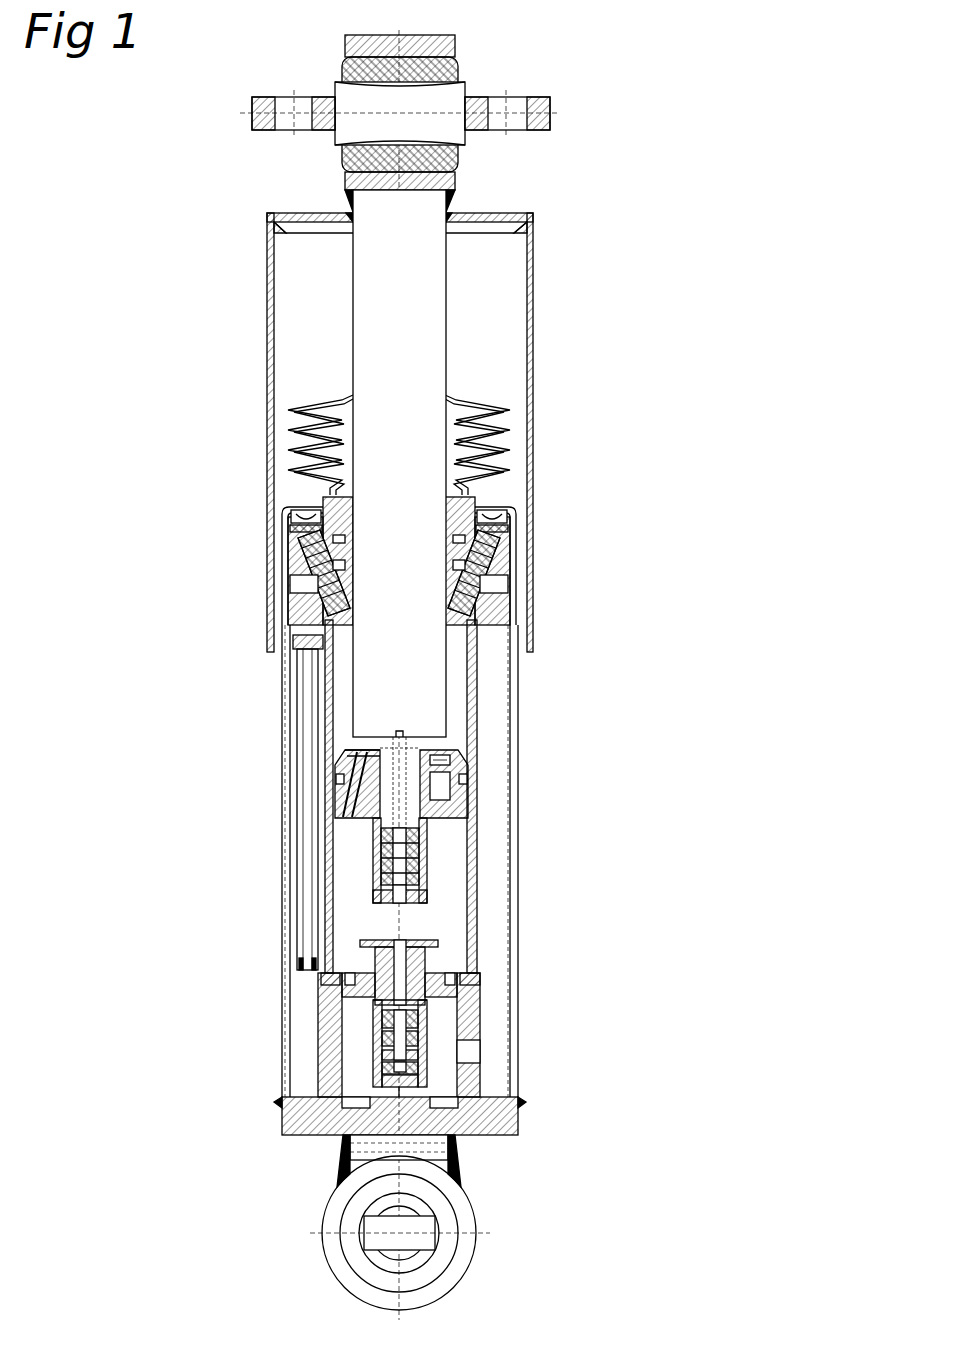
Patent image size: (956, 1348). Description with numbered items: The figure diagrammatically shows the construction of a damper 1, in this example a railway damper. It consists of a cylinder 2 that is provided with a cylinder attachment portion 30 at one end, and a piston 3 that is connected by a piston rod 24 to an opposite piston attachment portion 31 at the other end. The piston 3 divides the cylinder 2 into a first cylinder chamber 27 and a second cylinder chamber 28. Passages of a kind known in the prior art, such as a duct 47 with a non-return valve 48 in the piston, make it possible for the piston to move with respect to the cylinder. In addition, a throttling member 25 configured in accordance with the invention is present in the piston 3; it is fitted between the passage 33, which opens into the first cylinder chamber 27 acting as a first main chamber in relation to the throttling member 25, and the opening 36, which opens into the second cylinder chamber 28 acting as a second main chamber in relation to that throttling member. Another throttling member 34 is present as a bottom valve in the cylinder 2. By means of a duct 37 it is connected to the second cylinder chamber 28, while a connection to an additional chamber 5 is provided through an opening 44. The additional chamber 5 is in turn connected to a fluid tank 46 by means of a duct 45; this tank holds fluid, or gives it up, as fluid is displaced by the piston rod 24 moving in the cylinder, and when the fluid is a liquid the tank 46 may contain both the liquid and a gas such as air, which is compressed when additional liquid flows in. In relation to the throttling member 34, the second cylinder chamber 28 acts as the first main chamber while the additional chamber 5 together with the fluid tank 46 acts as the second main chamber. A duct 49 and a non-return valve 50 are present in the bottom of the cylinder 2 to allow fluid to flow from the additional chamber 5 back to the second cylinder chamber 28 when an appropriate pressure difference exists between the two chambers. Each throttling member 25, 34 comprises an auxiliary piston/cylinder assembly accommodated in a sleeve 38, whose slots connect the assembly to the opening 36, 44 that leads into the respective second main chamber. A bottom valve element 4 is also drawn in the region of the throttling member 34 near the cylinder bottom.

The damper 1 is at (443, 675).
The cylinder 2 is at (392, 806).
The piston 3 is at (397, 840).
The bottom valve 4 is at (440, 1033).
The additional chamber 5 is at (442, 1063).
The piston rod 24 is at (424, 277).
The throttling member 25 is at (372, 870).
The first cylinder chamber 27 is at (455, 680).
The second cylinder chamber 28 is at (414, 1008).
The cylinder attachment portion 30 is at (440, 1260).
The piston attachment portion 31 is at (538, 102).
The passage 33 is at (398, 748).
The throttling member 34 is at (383, 1073).
The opening 36 is at (402, 898).
The duct 37 is at (395, 950).
The sleeve 38 is at (423, 845).
The opening 44 is at (447, 1153).
The duct 45 is at (473, 1053).
The fluid tank 46 is at (490, 845).
The duct 47 is at (362, 790).
The non-return valve 48 is at (360, 750).
The duct 49 is at (352, 990).
The non-return valve 50 is at (338, 985).